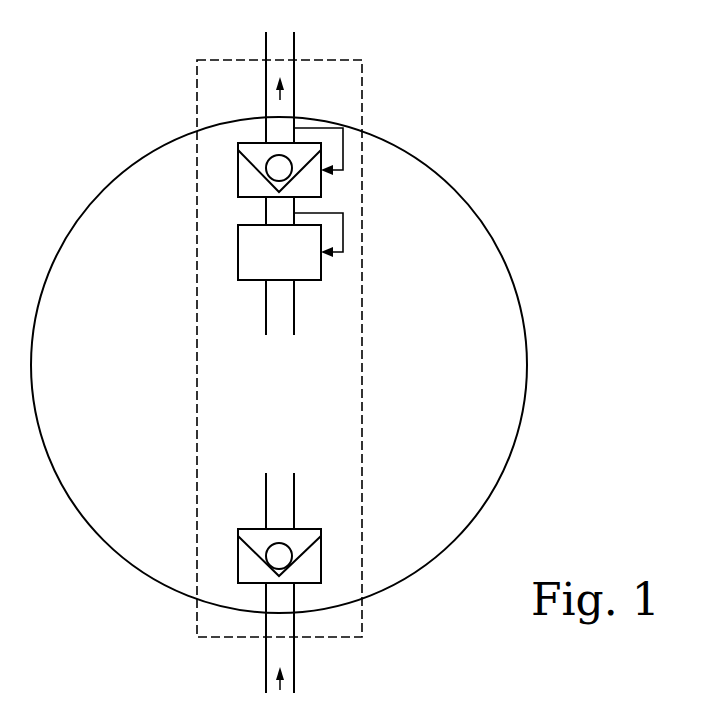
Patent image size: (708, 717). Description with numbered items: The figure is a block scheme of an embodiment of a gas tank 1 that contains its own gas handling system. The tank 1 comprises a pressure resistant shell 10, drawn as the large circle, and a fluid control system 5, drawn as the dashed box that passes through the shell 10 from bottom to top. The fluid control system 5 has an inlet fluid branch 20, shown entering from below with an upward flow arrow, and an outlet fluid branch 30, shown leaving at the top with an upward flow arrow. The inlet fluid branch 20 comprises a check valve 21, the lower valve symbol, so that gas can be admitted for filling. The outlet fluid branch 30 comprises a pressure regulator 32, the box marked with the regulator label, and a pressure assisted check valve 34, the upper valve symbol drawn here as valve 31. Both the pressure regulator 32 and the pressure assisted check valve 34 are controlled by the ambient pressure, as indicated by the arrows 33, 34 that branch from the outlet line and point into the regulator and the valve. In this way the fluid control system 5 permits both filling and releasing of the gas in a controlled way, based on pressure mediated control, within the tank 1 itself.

The tank 1 is at (545, 143).
The fluid control system 5 is at (197, 95).
The pressure resistant shell 10 is at (530, 362).
The inlet fluid branch 20 is at (263, 628).
The check valve 21 is at (321, 556).
The outlet fluid branch 30 is at (295, 78).
The outlet valve 31 is at (238, 170).
The pressure regulator 32 is at (238, 253).
The arrow 33 is at (343, 152).
The pressure assisted check valve 34 is at (343, 243).